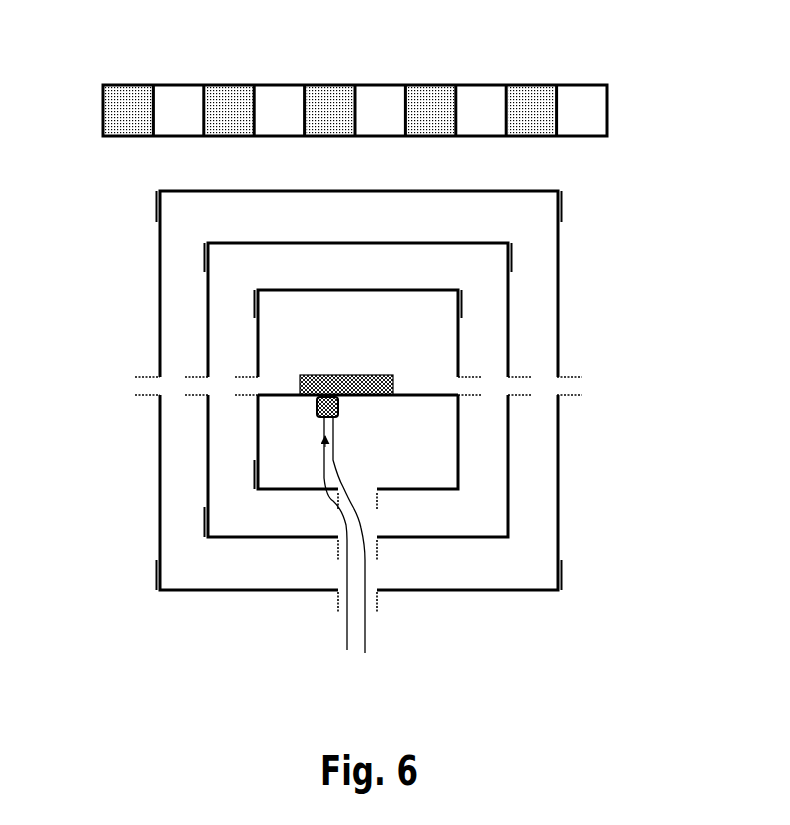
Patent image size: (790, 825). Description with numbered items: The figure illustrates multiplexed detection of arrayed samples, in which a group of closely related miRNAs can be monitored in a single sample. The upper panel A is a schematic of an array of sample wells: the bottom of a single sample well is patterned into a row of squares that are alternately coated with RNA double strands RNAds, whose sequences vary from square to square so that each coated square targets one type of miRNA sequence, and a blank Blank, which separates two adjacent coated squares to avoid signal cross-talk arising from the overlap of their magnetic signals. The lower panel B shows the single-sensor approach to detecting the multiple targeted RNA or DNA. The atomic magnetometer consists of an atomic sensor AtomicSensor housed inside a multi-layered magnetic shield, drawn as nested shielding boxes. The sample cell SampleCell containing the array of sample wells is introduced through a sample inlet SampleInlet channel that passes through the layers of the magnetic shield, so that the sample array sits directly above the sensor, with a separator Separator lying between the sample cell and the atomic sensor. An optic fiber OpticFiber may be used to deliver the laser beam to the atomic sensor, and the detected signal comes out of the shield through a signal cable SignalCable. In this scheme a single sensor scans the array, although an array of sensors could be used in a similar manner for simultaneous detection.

The schematic of an array of sample wells A is at (336, 73).
The RNA double strands coated square RNAds is at (229, 108).
The blank Blank is at (377, 108).
The example of detecting multiple targeted RNA or DNA B is at (314, 397).
The sample inlet channel SampleInlet is at (121, 380).
The separator Separator is at (443, 389).
The sample cell SampleCell is at (406, 379).
The atomic sensor AtomicSensor is at (346, 410).
The signal cable SignalCable is at (341, 643).
The optical fiber OpticFiber is at (368, 641).